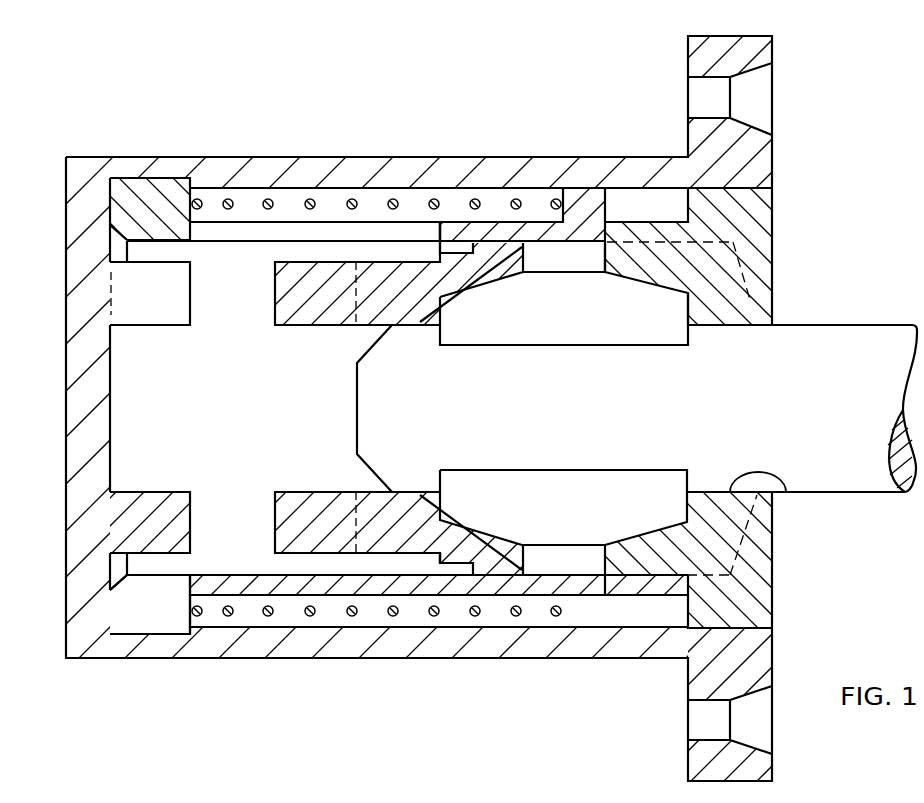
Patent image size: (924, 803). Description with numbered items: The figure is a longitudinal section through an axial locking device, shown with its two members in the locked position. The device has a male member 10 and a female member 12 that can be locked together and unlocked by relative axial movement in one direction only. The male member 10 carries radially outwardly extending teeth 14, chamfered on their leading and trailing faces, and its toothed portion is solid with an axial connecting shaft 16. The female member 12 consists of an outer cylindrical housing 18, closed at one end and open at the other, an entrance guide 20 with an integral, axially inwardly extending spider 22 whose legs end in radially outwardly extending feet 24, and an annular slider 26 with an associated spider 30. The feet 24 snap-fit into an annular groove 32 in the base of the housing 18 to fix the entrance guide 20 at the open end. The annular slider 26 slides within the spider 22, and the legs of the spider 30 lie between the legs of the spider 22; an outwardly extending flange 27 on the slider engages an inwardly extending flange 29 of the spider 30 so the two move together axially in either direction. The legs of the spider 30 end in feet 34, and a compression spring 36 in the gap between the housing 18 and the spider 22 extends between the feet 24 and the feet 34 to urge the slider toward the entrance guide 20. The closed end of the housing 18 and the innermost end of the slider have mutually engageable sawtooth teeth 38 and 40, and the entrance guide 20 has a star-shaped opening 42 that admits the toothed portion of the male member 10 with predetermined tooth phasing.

The male member 10 is at (572, 416).
The female member 12 is at (560, 665).
The teeth 14 is at (667, 315).
The axial connecting shaft 16 is at (877, 343).
The outer cylindrical housing 18 is at (422, 172).
The entrance guide 20 is at (770, 223).
The spider 22 is at (380, 228).
The radially outwardly extending feet 24 is at (140, 612).
The annular slider 26 is at (377, 297).
The outwardly extending flange 27 is at (502, 568).
The inwardly extending flange 29 is at (457, 253).
The spider 30 is at (503, 232).
The annular groove 32 is at (170, 613).
The radially outwardly extending feet 34 is at (587, 200).
The compression spring 36 is at (353, 198).
The sawtooth teeth 38 is at (190, 293).
The sawtooth teeth 40 is at (320, 517).
The star-shaped opening 42 is at (786, 492).